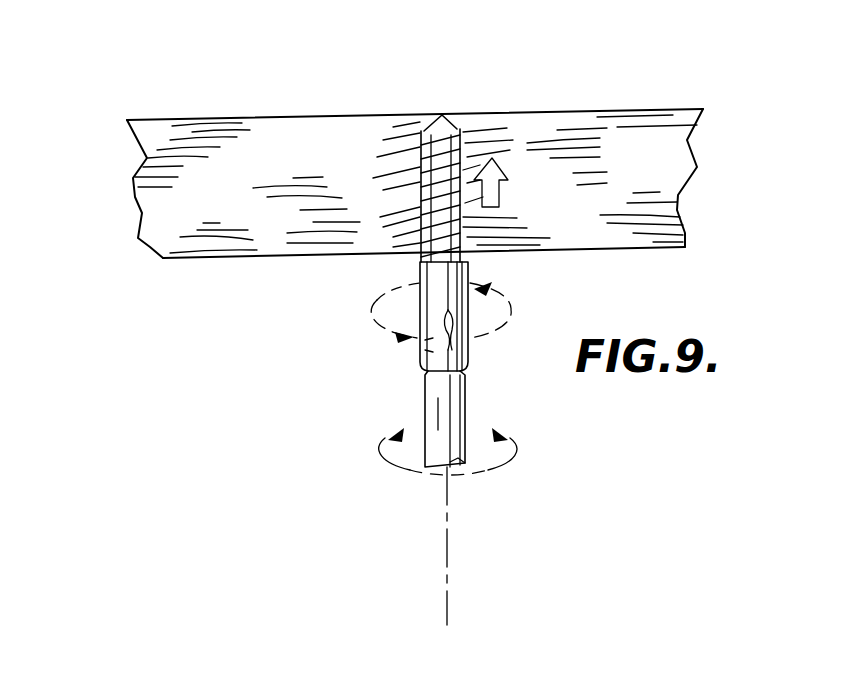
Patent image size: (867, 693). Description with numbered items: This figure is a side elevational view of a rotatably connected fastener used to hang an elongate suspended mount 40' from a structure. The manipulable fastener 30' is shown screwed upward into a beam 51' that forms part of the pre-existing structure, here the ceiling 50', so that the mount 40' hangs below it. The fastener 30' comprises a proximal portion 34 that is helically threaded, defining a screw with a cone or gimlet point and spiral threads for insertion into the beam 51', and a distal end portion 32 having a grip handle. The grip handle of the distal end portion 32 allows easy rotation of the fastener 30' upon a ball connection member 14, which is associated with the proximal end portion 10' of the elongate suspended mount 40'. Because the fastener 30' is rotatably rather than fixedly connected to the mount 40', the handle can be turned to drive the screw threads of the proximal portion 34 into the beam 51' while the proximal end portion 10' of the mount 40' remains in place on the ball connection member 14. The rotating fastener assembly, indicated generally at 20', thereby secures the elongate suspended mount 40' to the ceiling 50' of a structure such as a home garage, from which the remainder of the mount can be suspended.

The proximal end portion 10' is at (367, 419).
The ball connection member 14 is at (420, 347).
The fastener assembly 20' is at (268, 527).
The manipulable fastener 30' is at (367, 219).
The distal end portion 32 is at (470, 318).
The proximal portion 34 is at (452, 124).
The elongate suspended mount 40' is at (484, 378).
The ceiling 50' is at (372, 216).
The beam 51' is at (689, 158).